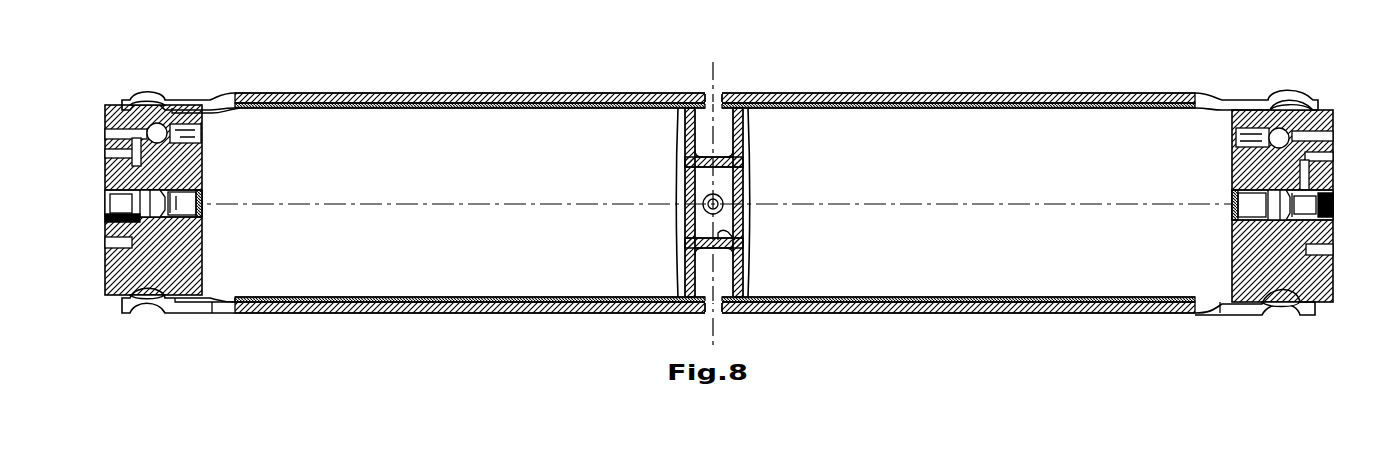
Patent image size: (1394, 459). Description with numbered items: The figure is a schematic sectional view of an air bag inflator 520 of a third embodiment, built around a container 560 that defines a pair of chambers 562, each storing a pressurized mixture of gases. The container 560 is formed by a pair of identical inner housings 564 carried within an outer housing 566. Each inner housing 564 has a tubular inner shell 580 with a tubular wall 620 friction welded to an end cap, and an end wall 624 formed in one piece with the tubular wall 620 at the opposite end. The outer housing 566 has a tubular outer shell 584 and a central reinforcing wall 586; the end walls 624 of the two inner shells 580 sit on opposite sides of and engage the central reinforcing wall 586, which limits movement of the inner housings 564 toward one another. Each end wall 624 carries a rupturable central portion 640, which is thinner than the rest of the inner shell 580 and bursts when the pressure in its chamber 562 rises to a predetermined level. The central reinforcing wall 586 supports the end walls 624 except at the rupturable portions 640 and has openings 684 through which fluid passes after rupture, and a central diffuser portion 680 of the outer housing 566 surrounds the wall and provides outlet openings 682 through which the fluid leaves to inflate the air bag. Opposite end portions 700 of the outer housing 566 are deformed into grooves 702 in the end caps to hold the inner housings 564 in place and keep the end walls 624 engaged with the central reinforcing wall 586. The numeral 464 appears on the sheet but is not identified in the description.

The reference 464 is at (491, 17).
The inflator 520 is at (1297, 78).
The container 560 is at (1325, 103).
The chamber 562 is at (582, 156).
The inner housing 564 is at (220, 303).
The outer housing 566 is at (1046, 95).
The tubular inner shell 580 is at (321, 292).
The tubular outer shell 584 is at (813, 97).
The central reinforcing wall 586 is at (700, 283).
The tubular wall 620 is at (404, 108).
The end wall 624 is at (680, 171).
The rupturable central portion 640 is at (680, 207).
The central diffuser portion 680 is at (732, 96).
The outlet opening 682 is at (710, 96).
The opening 684 is at (719, 201).
The deformed end portion 700 is at (155, 98).
The groove 702 is at (146, 298).